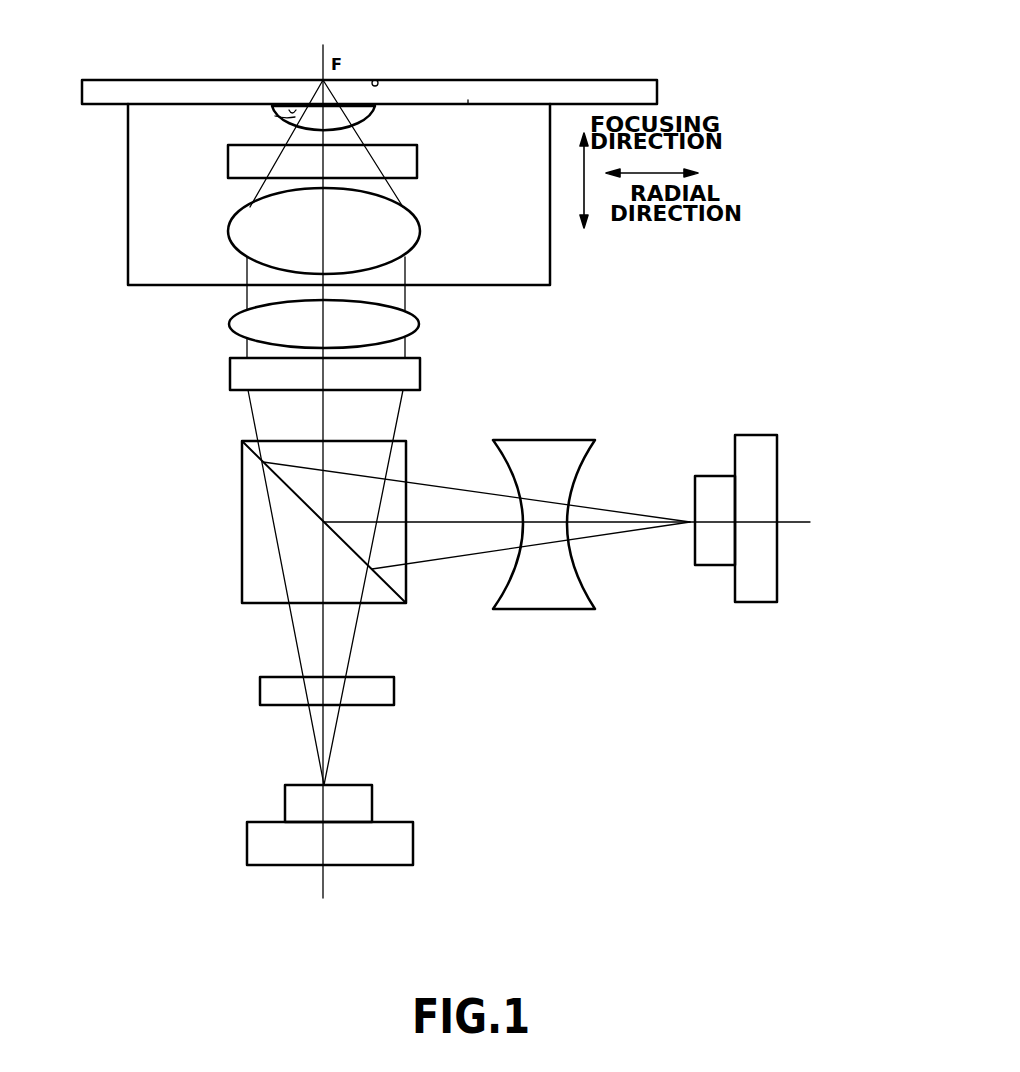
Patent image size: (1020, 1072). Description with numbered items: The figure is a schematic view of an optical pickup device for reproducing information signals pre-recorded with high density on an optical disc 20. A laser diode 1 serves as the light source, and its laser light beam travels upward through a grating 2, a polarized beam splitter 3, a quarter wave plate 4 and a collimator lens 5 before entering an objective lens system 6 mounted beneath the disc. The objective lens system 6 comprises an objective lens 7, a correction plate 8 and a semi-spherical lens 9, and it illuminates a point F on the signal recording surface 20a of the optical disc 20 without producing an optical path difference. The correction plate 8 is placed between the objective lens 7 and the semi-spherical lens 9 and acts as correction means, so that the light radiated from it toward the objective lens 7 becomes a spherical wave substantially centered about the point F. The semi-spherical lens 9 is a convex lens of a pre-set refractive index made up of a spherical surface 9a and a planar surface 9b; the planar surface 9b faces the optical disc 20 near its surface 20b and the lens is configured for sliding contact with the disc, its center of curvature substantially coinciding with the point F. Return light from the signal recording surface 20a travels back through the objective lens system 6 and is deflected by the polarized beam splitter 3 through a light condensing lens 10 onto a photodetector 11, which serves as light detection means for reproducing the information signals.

The laser diode 1 is at (285, 805).
The grating 2 is at (260, 690).
The polarized beam splitter 3 is at (242, 457).
The quarter wave plate 4 is at (230, 372).
The collimator lens 5 is at (230, 322).
The objective lens system 6 is at (128, 140).
The objective lens 7 is at (230, 230).
The correction plate 8 is at (228, 158).
The semi-spherical lens 9 is at (377, 110).
The spherical surface of lens 9 9a is at (285, 115).
The planar surface 9b is at (300, 108).
The light condensing lens 10 is at (558, 440).
The photodetector 11 is at (749, 435).
The optical disc 20 is at (658, 80).
The signal recording surface 20a is at (380, 80).
The substrate surface 20b is at (468, 100).